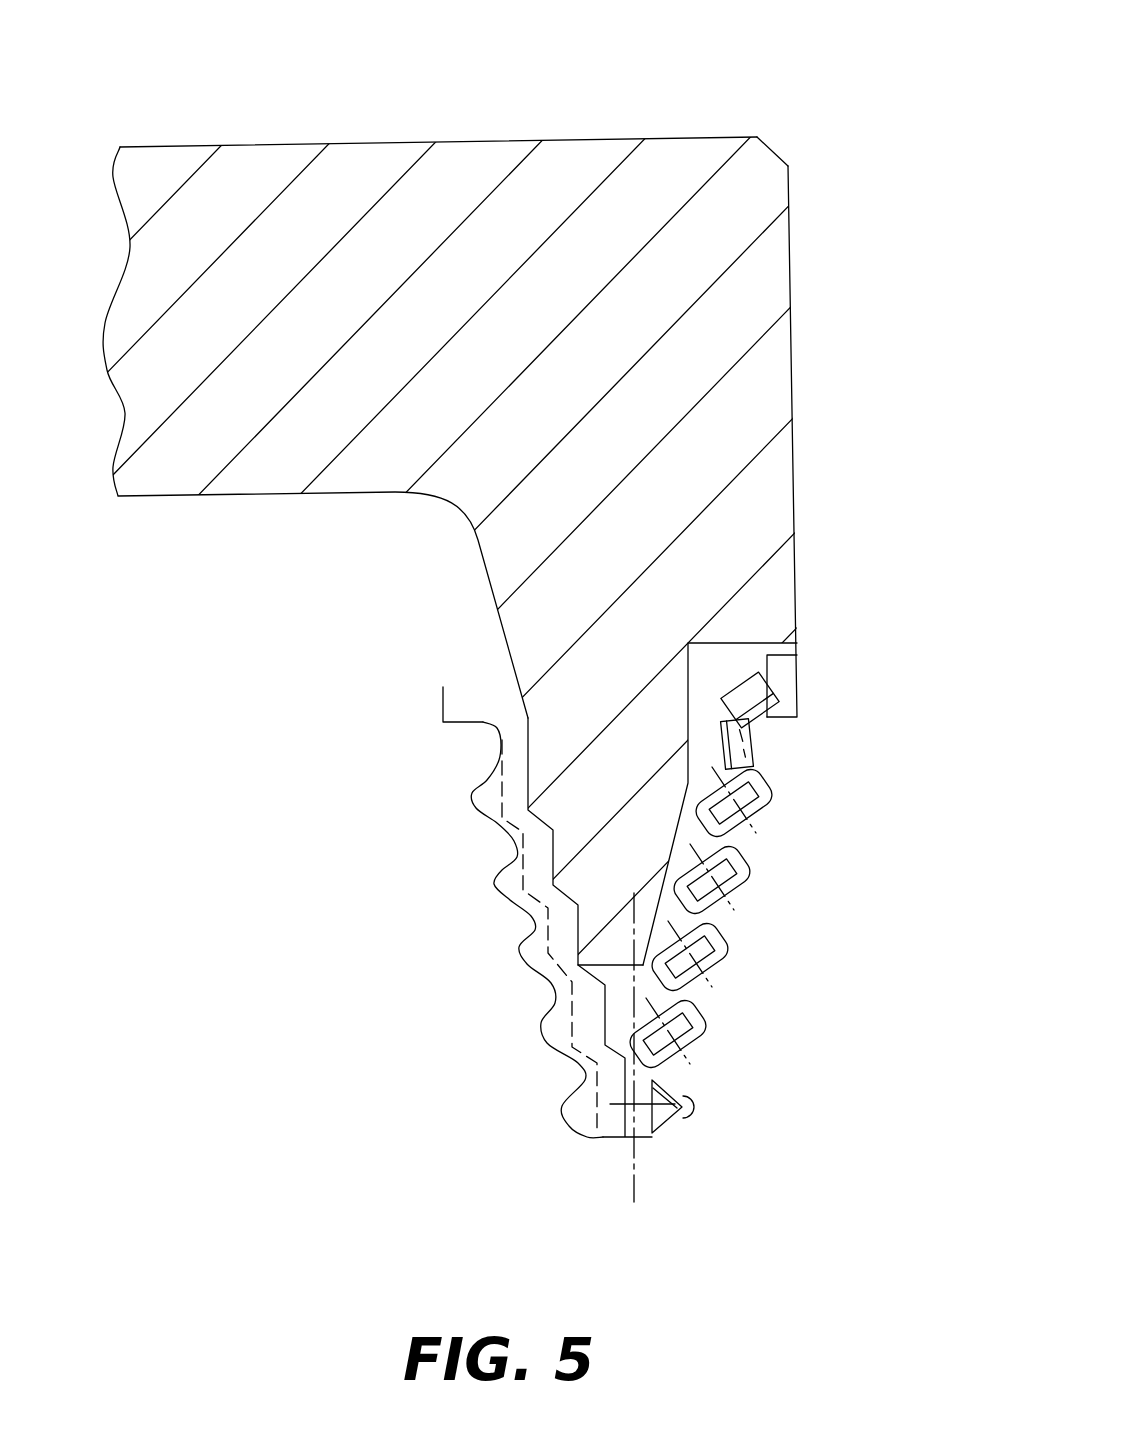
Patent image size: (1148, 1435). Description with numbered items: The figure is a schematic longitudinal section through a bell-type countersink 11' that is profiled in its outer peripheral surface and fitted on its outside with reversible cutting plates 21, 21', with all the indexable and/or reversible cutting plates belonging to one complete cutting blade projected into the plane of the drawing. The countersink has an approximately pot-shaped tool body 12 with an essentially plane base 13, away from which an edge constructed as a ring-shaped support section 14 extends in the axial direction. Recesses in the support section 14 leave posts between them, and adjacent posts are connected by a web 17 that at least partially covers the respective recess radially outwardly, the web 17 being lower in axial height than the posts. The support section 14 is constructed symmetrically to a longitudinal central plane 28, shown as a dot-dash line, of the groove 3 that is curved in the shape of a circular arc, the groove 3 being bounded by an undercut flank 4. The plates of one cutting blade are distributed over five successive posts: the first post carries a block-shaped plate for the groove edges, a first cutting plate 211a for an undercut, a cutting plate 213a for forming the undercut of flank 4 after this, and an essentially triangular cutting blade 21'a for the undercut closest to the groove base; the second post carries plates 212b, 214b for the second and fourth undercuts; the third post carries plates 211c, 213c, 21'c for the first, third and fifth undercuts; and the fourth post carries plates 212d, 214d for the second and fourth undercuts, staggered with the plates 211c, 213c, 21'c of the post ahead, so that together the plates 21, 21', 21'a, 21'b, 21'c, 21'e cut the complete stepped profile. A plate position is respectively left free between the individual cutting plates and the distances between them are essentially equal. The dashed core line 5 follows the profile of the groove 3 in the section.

The bell-type countersink 11' is at (450, 366).
The tool body 12 is at (780, 146).
The base 13 is at (334, 327).
The web 17 is at (618, 702).
The support section 14 is at (778, 772).
The groove 3 is at (497, 712).
The thread core line 5 is at (520, 860).
The cutting blade 21'a is at (771, 903).
The insert side face 21'b is at (805, 734).
The insert edge 21'e is at (804, 743).
The first cutting plate 211a is at (768, 787).
The reversible cutting plate 211c is at (745, 815).
The reversible cutting plate 212b is at (745, 857).
The cutting plate 212d is at (737, 892).
The cutting plate 213a is at (722, 935).
The reversible cutting plate 213c is at (717, 970).
The reversible cutting plate 214b is at (705, 1020).
The cutting plate 214d is at (703, 1040).
The reversible cutting plate 21 is at (778, 915).
The flank 4 is at (735, 900).
The reversible cutting plate 21'c is at (722, 1104).
The reversible cutting plate 21' is at (686, 1133).
The longitudinal central plane 28 is at (636, 1185).